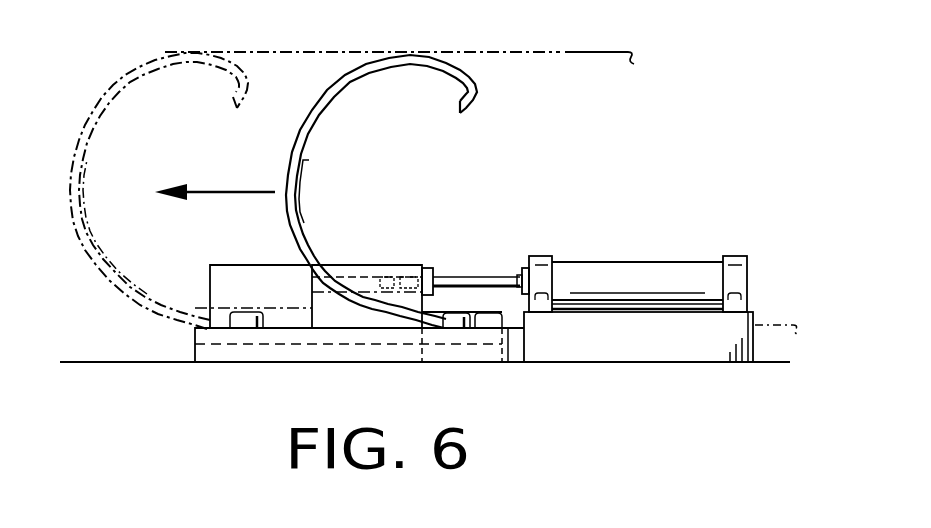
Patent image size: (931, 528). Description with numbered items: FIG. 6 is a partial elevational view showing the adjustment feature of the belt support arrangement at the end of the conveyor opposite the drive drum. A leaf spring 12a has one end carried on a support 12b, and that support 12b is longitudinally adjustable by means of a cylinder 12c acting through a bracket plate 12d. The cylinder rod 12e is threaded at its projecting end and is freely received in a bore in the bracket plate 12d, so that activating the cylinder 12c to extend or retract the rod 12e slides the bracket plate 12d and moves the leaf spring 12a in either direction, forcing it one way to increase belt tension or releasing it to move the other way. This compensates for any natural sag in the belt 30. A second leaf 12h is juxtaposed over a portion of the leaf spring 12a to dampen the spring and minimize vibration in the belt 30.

The belt 30 is at (612, 2).
The leaf spring 12a is at (167, 67).
The second leaf 12h is at (95, 240).
The bracket plate 12d is at (258, 264).
The cylinder rod 12e is at (482, 276).
The cylinder 12c is at (625, 272).
The support 12b is at (247, 353).